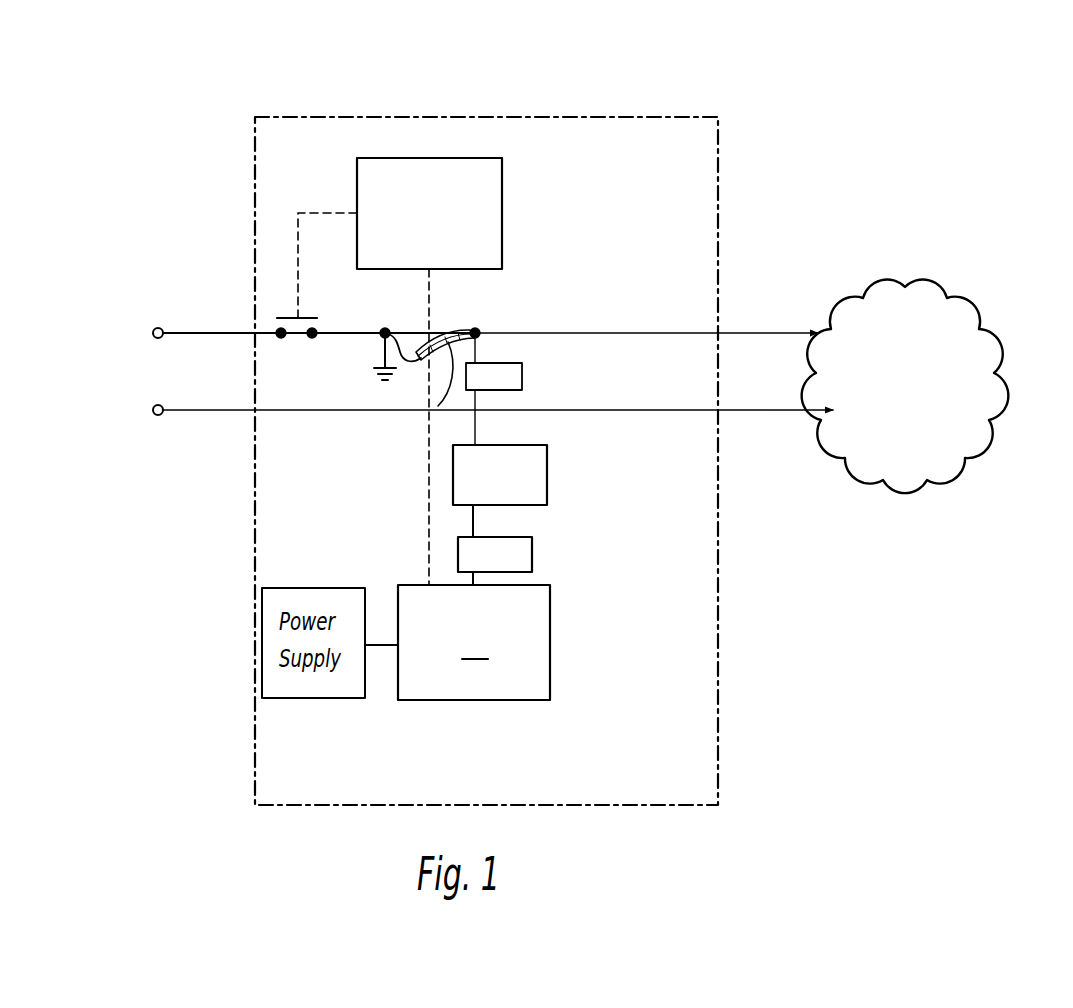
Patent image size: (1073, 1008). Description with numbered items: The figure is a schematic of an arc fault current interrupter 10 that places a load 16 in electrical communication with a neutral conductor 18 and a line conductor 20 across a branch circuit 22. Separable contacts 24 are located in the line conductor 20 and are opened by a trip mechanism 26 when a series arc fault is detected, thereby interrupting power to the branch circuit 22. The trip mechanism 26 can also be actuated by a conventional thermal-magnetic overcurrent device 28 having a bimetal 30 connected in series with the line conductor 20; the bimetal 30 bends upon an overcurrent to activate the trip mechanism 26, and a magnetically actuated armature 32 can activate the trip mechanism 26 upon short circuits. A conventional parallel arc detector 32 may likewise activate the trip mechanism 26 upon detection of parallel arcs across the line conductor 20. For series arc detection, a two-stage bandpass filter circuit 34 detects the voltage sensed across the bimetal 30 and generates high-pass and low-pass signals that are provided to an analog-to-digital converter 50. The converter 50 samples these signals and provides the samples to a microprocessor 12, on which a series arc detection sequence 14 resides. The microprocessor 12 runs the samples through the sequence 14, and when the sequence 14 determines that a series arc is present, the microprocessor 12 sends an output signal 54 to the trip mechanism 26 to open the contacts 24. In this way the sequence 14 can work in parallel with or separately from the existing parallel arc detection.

The arc fault current interrupter 10 is at (569, 89).
The microprocessor 12 is at (550, 640).
The series arc detection sequence 14 is at (475, 644).
The load 16 is at (930, 290).
The neutral conductor 18 is at (153, 414).
The line conductor 20 is at (153, 335).
The branch circuit 22 is at (761, 329).
The separable contacts 24 is at (283, 303).
The trip mechanism 26 is at (502, 210).
The thermal-magnetic overcurrent device 28 is at (461, 314).
The bimetal 30 is at (438, 406).
The parallel arc detector 32 is at (419, 354).
The two-stage bandpass filter circuit 34 is at (547, 474).
The analog-to-digital converter 50 is at (532, 553).
The output signal 54 is at (428, 488).